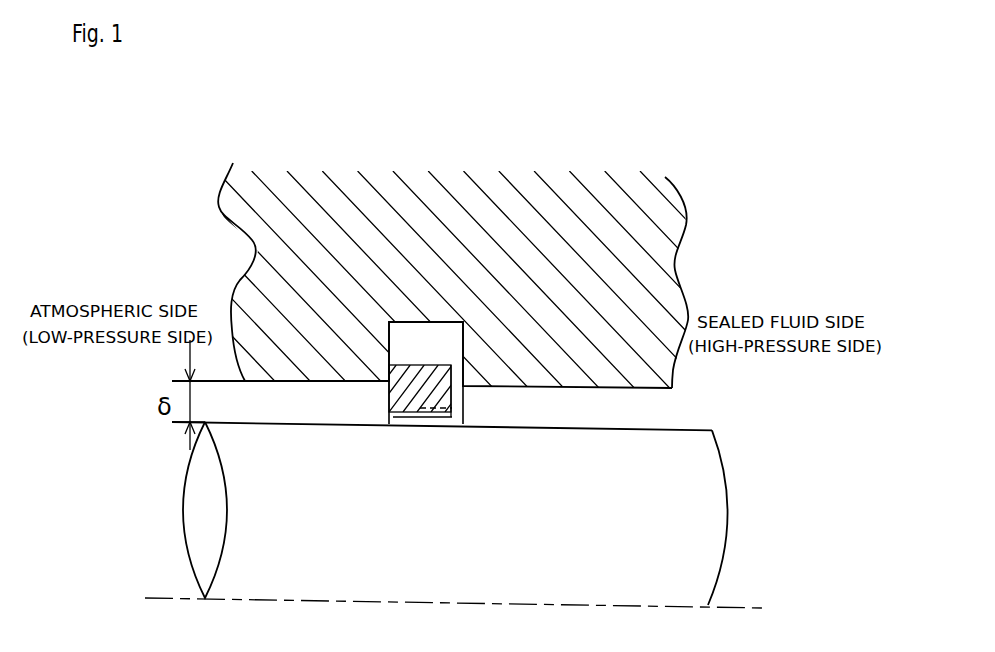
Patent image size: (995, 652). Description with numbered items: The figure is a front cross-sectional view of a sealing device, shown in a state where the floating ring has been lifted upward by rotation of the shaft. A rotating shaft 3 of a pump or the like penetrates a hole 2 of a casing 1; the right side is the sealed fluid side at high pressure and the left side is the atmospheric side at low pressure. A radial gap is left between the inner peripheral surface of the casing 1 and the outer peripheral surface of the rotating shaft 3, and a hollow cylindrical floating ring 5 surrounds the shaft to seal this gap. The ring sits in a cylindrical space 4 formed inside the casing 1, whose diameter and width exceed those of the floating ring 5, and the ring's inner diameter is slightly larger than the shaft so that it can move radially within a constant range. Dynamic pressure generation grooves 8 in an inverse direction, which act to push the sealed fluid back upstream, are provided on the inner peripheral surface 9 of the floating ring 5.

The casing 1 is at (440, 205).
The hole 2 is at (322, 382).
The rotating shaft 3 is at (553, 542).
The cylindrical space 4 is at (433, 323).
The floating ring 5 is at (389, 393).
The dynamic pressure generation grooves 8 is at (440, 420).
The inner peripheral surface 9 is at (400, 414).